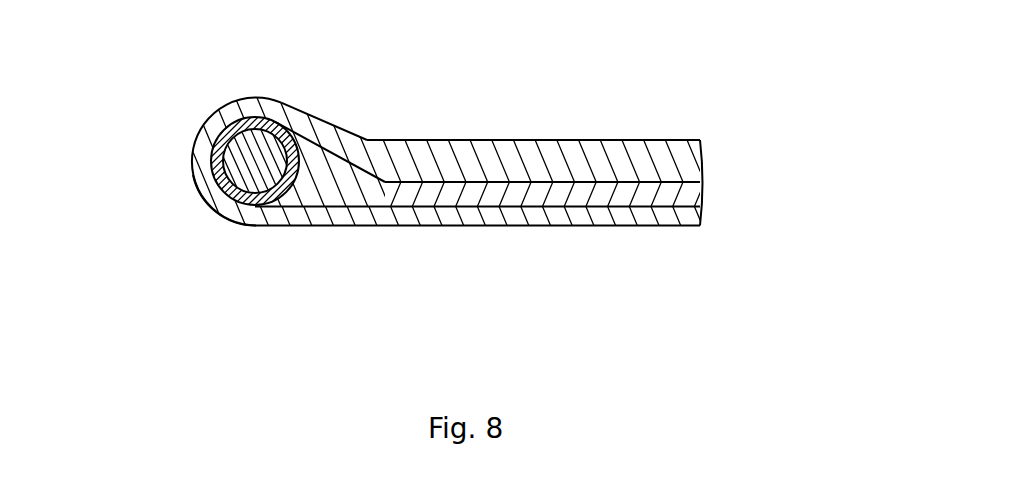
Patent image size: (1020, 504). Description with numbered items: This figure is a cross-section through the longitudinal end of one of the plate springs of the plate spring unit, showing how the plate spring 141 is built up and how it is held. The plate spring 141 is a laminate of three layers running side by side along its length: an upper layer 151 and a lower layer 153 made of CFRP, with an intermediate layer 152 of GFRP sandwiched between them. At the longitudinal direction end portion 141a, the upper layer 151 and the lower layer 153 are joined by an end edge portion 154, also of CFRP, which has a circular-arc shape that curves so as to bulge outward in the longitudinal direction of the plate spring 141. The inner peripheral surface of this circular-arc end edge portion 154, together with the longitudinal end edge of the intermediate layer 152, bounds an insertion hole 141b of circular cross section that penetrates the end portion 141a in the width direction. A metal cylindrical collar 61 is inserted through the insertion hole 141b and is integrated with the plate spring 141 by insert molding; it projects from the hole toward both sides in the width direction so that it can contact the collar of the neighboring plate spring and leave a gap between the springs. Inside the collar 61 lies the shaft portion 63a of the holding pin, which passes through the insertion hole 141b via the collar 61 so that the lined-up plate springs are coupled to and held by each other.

The plate spring 141 is at (426, 176).
The longitudinal direction end portion 141a is at (297, 113).
The insertion hole 141b is at (211, 164).
The upper layer 151 is at (472, 140).
The intermediate layer 152 is at (507, 195).
The lower layer 153 is at (640, 213).
The end edge portion 154 is at (207, 123).
The collar 61 is at (220, 193).
The shaft portion 63a is at (262, 183).